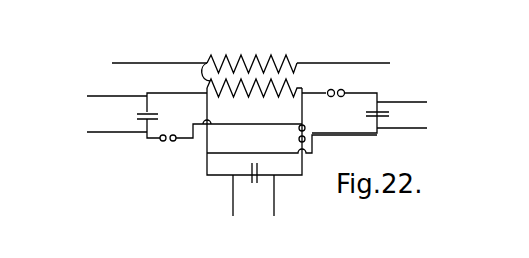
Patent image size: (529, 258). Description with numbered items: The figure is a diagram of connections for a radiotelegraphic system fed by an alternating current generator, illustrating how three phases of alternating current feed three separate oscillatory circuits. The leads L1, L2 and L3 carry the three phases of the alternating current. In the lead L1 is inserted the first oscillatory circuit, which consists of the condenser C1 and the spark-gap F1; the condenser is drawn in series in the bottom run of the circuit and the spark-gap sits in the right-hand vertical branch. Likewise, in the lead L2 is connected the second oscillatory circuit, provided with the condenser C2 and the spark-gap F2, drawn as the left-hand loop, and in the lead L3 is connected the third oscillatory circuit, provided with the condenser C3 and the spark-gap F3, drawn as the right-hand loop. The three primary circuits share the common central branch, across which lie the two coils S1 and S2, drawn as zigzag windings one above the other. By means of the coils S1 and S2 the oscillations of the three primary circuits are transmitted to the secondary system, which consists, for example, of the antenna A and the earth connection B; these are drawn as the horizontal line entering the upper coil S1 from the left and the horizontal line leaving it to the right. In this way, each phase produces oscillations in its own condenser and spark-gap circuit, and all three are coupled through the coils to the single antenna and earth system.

The antenna A is at (146, 70).
The earth connection B is at (346, 70).
The coil S1 is at (206, 62).
The coil S2 is at (254, 61).
The lead L1 is at (253, 199).
The lead L2 is at (106, 114).
The lead L3 is at (417, 114).
The condenser C1 is at (250, 180).
The condenser C2 is at (140, 118).
The condenser C3 is at (385, 118).
The spark-gap F1 is at (306, 134).
The spark-gap F2 is at (167, 144).
The spark-gap F3 is at (340, 90).